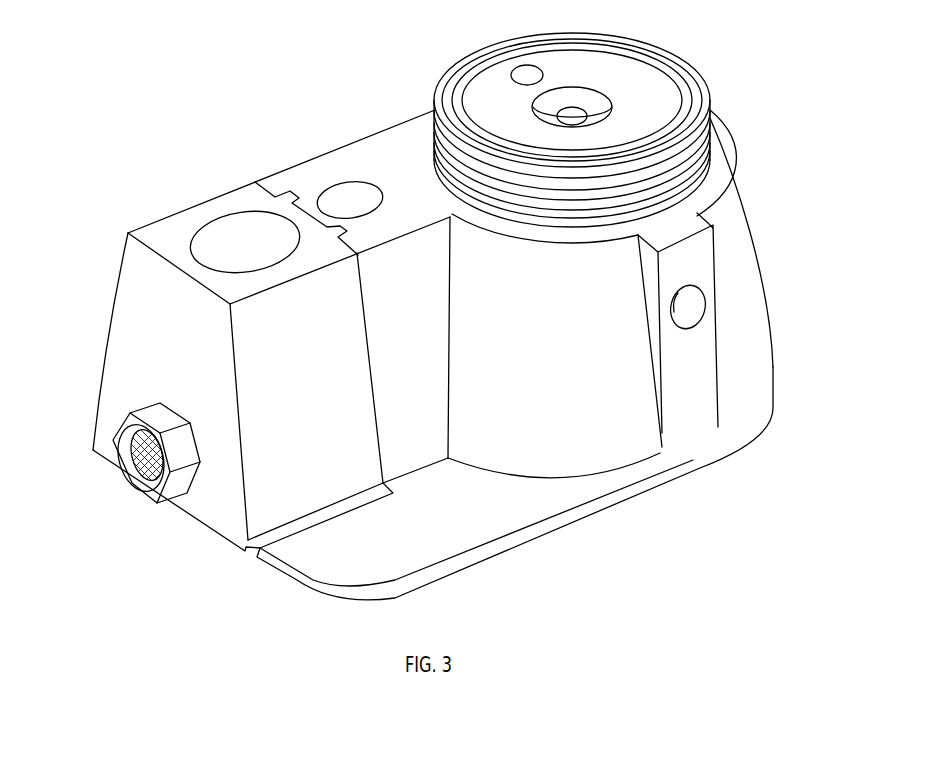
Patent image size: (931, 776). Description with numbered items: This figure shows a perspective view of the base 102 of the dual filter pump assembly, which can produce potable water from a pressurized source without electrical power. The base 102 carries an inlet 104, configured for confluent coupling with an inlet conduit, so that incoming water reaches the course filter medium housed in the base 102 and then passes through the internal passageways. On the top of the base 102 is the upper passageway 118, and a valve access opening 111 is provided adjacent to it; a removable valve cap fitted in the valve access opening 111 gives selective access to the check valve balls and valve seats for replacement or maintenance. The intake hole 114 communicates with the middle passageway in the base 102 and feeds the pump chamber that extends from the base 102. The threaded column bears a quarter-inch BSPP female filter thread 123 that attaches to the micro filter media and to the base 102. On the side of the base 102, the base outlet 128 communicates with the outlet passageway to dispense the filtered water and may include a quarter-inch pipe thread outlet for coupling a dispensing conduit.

The base 102 is at (725, 106).
The inlet 104 is at (120, 470).
The valve access opening 111 is at (347, 195).
The intake hole 114 is at (233, 232).
The upper passageway 118 is at (517, 72).
The female filter thread 123 is at (574, 115).
The base outlet 128 is at (693, 305).